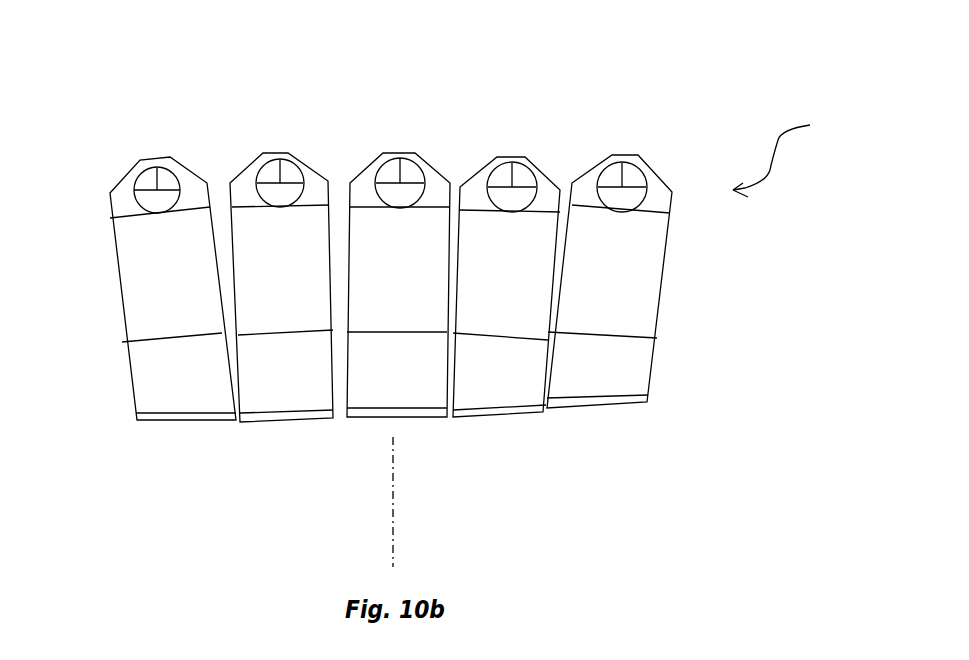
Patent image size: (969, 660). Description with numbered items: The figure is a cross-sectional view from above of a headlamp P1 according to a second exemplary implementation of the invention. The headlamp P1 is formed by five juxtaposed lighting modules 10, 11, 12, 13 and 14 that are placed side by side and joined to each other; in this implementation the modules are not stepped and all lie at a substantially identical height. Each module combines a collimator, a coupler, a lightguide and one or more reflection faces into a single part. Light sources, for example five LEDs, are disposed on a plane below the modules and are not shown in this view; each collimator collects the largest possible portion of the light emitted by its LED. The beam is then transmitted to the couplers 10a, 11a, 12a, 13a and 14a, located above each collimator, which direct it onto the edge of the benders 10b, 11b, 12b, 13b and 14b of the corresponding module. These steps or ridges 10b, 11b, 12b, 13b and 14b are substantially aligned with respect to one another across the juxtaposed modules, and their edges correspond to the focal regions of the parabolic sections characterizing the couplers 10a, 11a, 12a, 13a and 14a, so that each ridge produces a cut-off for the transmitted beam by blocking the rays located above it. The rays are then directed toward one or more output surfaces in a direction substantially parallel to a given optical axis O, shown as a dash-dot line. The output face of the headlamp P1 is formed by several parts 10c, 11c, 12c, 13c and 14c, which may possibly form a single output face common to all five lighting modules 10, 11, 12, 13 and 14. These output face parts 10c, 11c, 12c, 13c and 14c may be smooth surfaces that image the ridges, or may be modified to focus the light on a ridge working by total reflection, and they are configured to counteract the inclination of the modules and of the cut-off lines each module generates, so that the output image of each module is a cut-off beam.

The lighting module 10 is at (162, 158).
The coupler 10a is at (145, 180).
The bender 10b is at (153, 342).
The output face part 10c is at (152, 417).
The lighting module 11 is at (287, 153).
The coupler 11a is at (270, 178).
The bender 11b is at (287, 337).
The output face part 11c is at (285, 415).
The lighting module 12 is at (410, 153).
The coupler 12a is at (392, 178).
The bender 12b is at (390, 333).
The output face part 12c is at (395, 413).
The lighting module 13 is at (520, 157).
The coupler 13a is at (505, 180).
The bender 13b is at (490, 337).
The output face part 13c is at (507, 412).
The lighting module 14 is at (632, 155).
The coupler 14a is at (612, 178).
The bender 14b is at (585, 333).
The output face part 14c is at (638, 407).
The optical axis O is at (410, 507).
The headlamp P1 is at (796, 157).